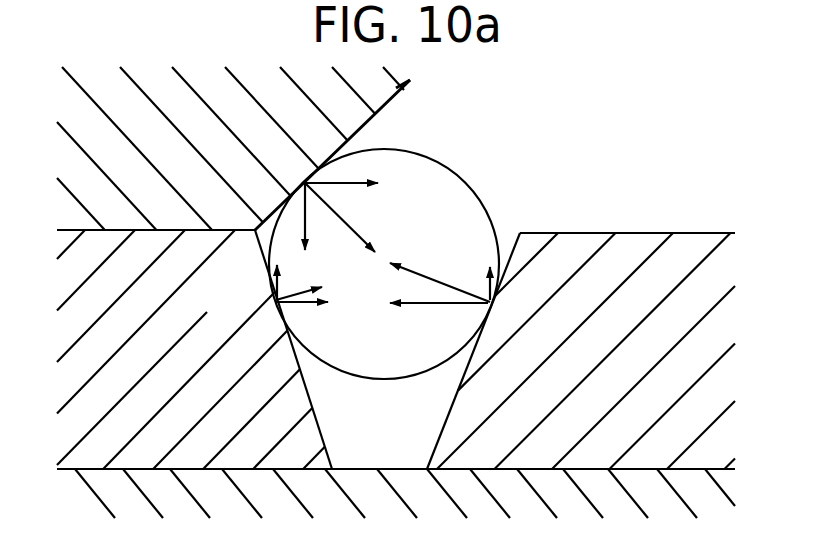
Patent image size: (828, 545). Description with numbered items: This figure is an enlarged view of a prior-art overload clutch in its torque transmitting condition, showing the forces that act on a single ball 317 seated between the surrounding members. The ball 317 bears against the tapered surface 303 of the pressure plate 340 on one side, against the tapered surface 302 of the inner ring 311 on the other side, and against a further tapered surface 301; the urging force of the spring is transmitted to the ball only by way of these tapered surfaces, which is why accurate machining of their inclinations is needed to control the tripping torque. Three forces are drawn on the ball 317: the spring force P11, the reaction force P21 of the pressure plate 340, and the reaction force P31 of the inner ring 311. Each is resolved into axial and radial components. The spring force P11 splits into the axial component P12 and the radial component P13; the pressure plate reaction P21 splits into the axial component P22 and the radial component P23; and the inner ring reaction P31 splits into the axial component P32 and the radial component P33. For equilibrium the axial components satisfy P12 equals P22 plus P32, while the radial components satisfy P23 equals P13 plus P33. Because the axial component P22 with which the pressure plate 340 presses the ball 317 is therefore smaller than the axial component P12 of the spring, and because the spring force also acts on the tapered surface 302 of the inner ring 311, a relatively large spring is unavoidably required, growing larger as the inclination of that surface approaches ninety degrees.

The pressure plate 340 is at (394, 88).
The tapered surface 303 is at (383, 105).
The ball 317 is at (467, 217).
The tapered surface of the inner ring 302 is at (332, 410).
The tapered surface 301 is at (452, 405).
The inner ring 311 is at (303, 462).
The spring force P11 is at (440, 278).
The axial component force of the spring P12 is at (439, 320).
The radial component of the spring force P13 is at (472, 265).
The reaction force of the pressure plate P21 is at (347, 217).
The axial component of the pressure plate reaction force P22 is at (354, 168).
The radial component of the pressure plate reaction force P23 is at (328, 220).
The reaction force of the inner ring P31 is at (312, 280).
The axial component of the inner ring reaction force P32 is at (313, 319).
The radial component of the inner ring reaction force P33 is at (246, 289).